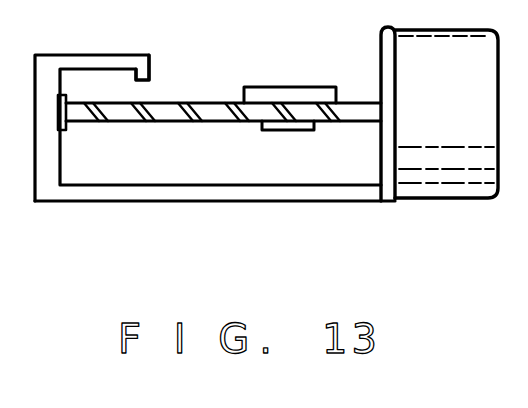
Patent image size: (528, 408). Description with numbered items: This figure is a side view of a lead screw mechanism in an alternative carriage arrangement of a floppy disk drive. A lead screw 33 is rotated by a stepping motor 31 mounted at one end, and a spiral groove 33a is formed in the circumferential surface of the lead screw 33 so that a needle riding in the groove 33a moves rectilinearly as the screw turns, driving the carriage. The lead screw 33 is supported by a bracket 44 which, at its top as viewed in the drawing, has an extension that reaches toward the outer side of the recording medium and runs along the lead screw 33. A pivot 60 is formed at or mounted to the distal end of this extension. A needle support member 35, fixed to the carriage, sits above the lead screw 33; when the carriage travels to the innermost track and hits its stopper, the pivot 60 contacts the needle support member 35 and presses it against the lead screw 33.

The stepping motor 31 is at (441, 190).
The lead screw 33 is at (213, 108).
The spiral groove 33a is at (193, 122).
The needle support member 35 is at (297, 97).
The bracket 44 is at (161, 193).
The pivot 60 is at (148, 67).